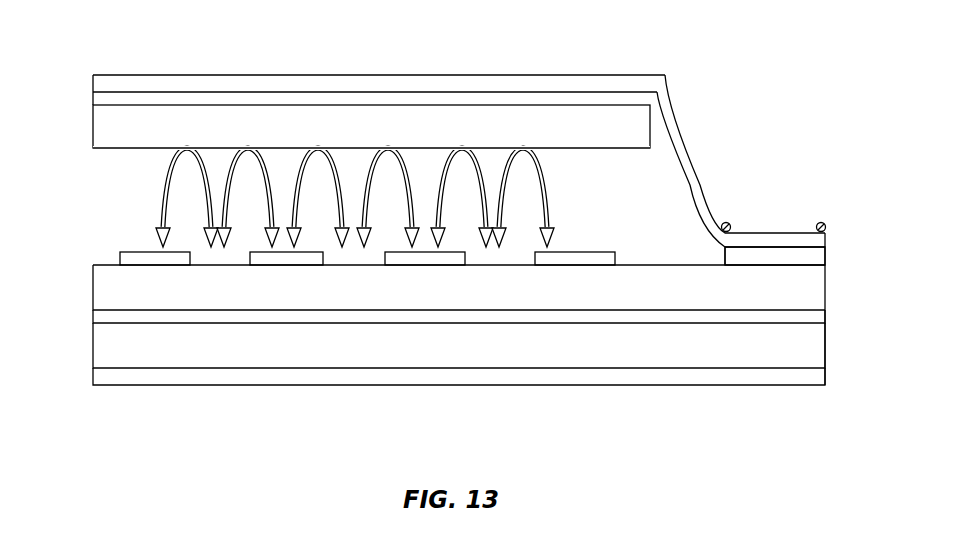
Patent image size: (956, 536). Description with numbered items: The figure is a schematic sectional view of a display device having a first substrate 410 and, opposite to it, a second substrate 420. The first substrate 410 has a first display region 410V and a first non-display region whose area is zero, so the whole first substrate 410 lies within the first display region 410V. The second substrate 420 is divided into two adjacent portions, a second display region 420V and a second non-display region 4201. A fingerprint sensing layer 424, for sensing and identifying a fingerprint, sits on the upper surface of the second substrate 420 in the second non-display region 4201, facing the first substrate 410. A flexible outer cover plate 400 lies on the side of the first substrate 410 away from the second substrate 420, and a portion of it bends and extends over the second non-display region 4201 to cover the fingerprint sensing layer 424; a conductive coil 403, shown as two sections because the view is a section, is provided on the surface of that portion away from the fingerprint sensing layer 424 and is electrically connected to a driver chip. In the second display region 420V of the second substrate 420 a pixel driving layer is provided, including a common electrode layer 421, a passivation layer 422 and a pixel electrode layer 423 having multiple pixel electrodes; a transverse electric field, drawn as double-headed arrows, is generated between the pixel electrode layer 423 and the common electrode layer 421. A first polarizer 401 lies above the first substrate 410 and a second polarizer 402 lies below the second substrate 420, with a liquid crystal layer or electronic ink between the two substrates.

The first polarizer 401 is at (120, 100).
The first substrate 410 is at (118, 131).
The first display region 410V is at (647, 72).
The flexible outer cover plate 400 is at (766, 239).
The conductive coil 403 is at (825, 221).
The fingerprint sensing layer 424 is at (790, 258).
The pixel electrode layer 423 is at (150, 258).
The passivation layer 422 is at (150, 288).
The common electrode layer 421 is at (147, 318).
The second substrate 420 is at (795, 348).
The second polarizer 402 is at (147, 375).
The second display region 420V is at (637, 440).
The second non-display region 4201 is at (825, 390).